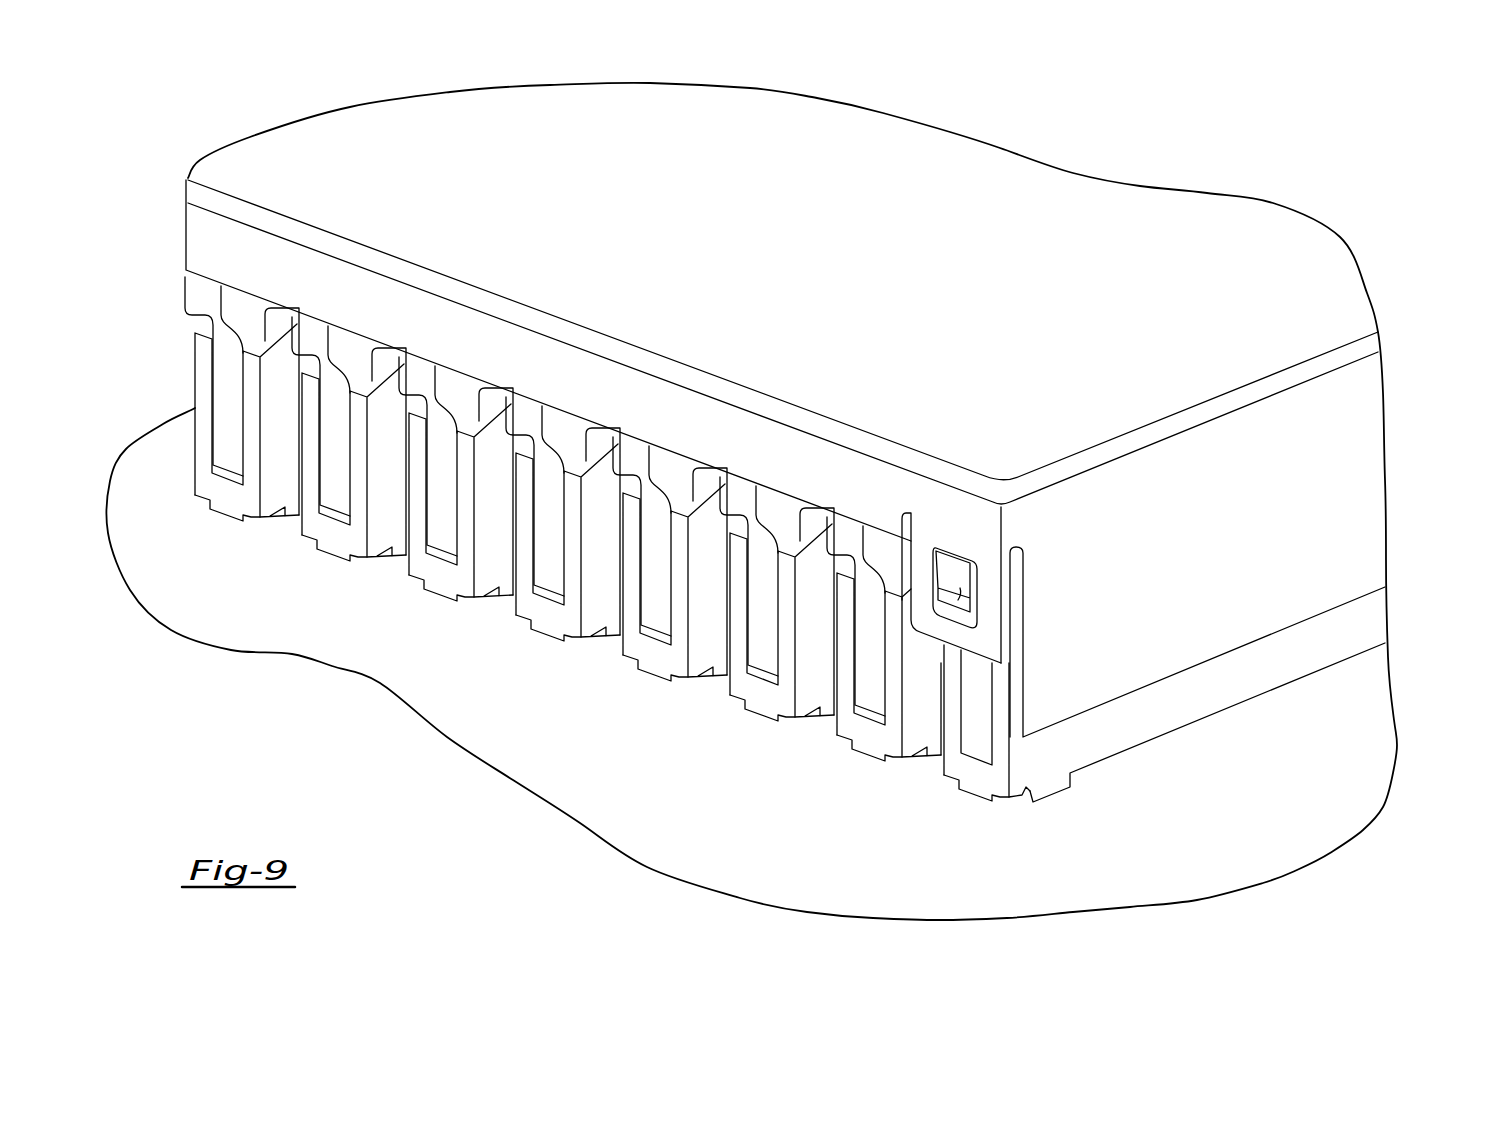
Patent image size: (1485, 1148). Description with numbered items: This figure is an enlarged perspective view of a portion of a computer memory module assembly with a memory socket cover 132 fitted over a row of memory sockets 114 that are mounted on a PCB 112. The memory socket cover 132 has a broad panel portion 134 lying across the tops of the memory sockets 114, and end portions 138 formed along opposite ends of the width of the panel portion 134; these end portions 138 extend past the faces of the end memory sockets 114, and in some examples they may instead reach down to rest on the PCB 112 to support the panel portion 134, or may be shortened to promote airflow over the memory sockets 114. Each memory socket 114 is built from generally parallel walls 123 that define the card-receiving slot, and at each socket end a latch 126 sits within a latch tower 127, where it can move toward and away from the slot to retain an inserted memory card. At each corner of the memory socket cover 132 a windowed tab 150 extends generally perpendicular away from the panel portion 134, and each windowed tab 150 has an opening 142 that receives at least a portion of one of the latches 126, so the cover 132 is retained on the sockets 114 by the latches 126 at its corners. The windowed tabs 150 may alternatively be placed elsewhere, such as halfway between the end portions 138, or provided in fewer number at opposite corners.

The PCB 112 is at (1290, 840).
The memory sockets 114 is at (247, 521).
The walls 123 is at (1358, 625).
The latches 126 is at (203, 293).
The latch tower 127 is at (203, 463).
The memory socket cover 132 is at (953, 132).
The panel portion 134 is at (1053, 197).
The end portions 138 is at (1355, 440).
The opening 142 is at (970, 612).
The windowed tab 150 is at (990, 637).